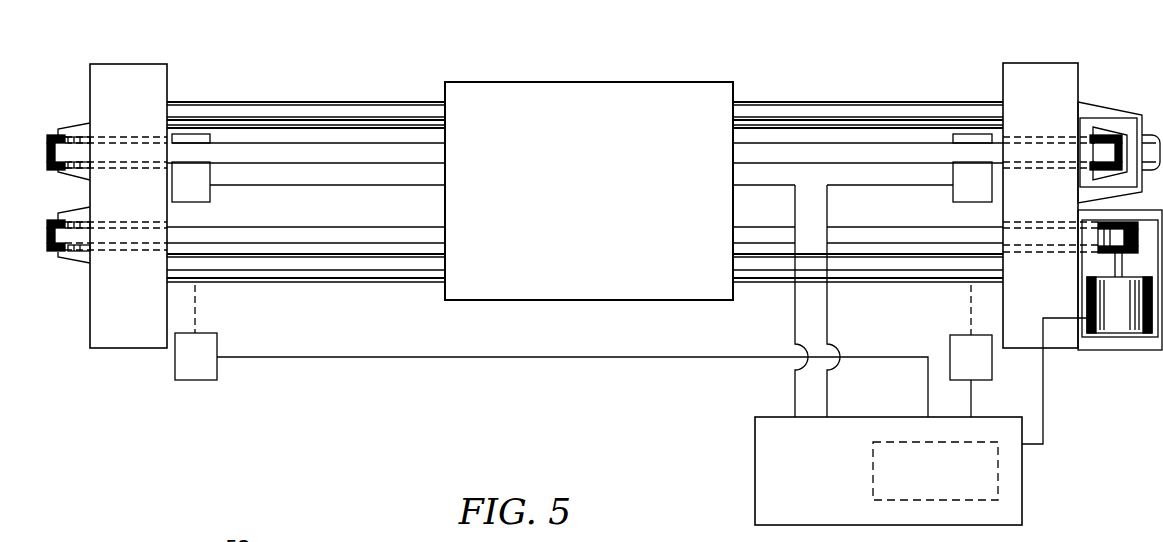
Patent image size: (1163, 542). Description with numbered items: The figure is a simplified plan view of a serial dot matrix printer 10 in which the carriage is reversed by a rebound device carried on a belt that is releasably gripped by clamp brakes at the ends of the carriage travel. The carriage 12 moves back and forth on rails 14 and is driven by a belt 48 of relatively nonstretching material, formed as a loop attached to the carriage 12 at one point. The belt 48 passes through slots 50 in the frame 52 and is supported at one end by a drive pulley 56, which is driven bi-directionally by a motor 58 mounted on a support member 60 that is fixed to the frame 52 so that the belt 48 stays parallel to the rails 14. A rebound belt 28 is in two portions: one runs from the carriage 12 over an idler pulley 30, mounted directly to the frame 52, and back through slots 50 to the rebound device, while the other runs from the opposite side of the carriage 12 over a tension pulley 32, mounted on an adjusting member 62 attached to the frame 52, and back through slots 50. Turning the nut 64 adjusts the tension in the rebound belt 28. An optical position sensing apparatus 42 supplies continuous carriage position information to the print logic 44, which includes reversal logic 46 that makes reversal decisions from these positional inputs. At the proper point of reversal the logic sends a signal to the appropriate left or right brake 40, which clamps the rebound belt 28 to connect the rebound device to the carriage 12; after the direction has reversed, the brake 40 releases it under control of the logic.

The serial printer 10 is at (758, 51).
The carriage 12 is at (503, 97).
The rails 14 is at (297, 112).
The rebound belt 28 is at (340, 150).
The idler pulley 30 is at (60, 133).
The tension pulley 32 is at (1090, 138).
The brake 40 is at (201, 181).
The optical position sensing apparatus 42 is at (205, 366).
The print logic 44 is at (760, 463).
The reversal logic 46 is at (910, 442).
The belt 48 is at (378, 237).
The slots 50 is at (126, 136).
The frame 52 is at (158, 80).
The drive pulley 56 is at (1098, 252).
The motor 58 is at (1113, 293).
The support member 60 is at (1110, 340).
The adjusting member 62 is at (1104, 96).
The nut 64 is at (1150, 135).